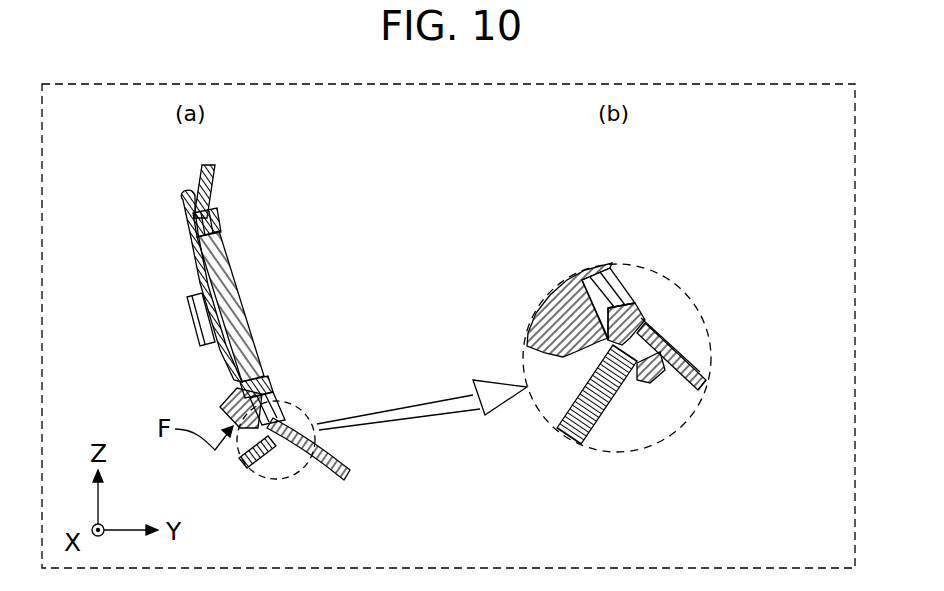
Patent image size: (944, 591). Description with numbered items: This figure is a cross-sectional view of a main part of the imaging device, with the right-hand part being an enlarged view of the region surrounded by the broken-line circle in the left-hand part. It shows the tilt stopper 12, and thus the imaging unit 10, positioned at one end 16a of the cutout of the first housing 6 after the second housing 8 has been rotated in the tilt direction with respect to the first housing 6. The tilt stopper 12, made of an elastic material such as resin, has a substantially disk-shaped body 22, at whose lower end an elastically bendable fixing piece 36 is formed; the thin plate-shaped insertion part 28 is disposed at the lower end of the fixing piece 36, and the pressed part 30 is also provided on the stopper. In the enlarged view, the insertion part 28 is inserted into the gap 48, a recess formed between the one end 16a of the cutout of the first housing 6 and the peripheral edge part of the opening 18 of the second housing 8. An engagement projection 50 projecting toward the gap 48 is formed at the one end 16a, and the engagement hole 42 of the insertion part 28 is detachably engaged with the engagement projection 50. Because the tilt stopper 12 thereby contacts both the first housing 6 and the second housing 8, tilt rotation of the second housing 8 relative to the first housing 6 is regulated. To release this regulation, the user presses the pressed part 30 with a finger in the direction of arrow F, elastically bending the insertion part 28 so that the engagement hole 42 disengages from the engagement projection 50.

The first housing 6 is at (240, 456).
The second housing 8 is at (302, 456).
The imaging unit 10 is at (258, 322).
The tilt stopper 12 is at (176, 197).
The one end of cutout 16a is at (278, 418).
The opening 18 is at (204, 214).
The body 22 is at (200, 250).
The insertion part 28 is at (273, 443).
The pressed part 30 is at (237, 426).
The fixing piece 36 is at (642, 372).
The engagement hole 42 is at (700, 393).
The gap 48 is at (287, 413).
The engagement projection 50 is at (662, 334).